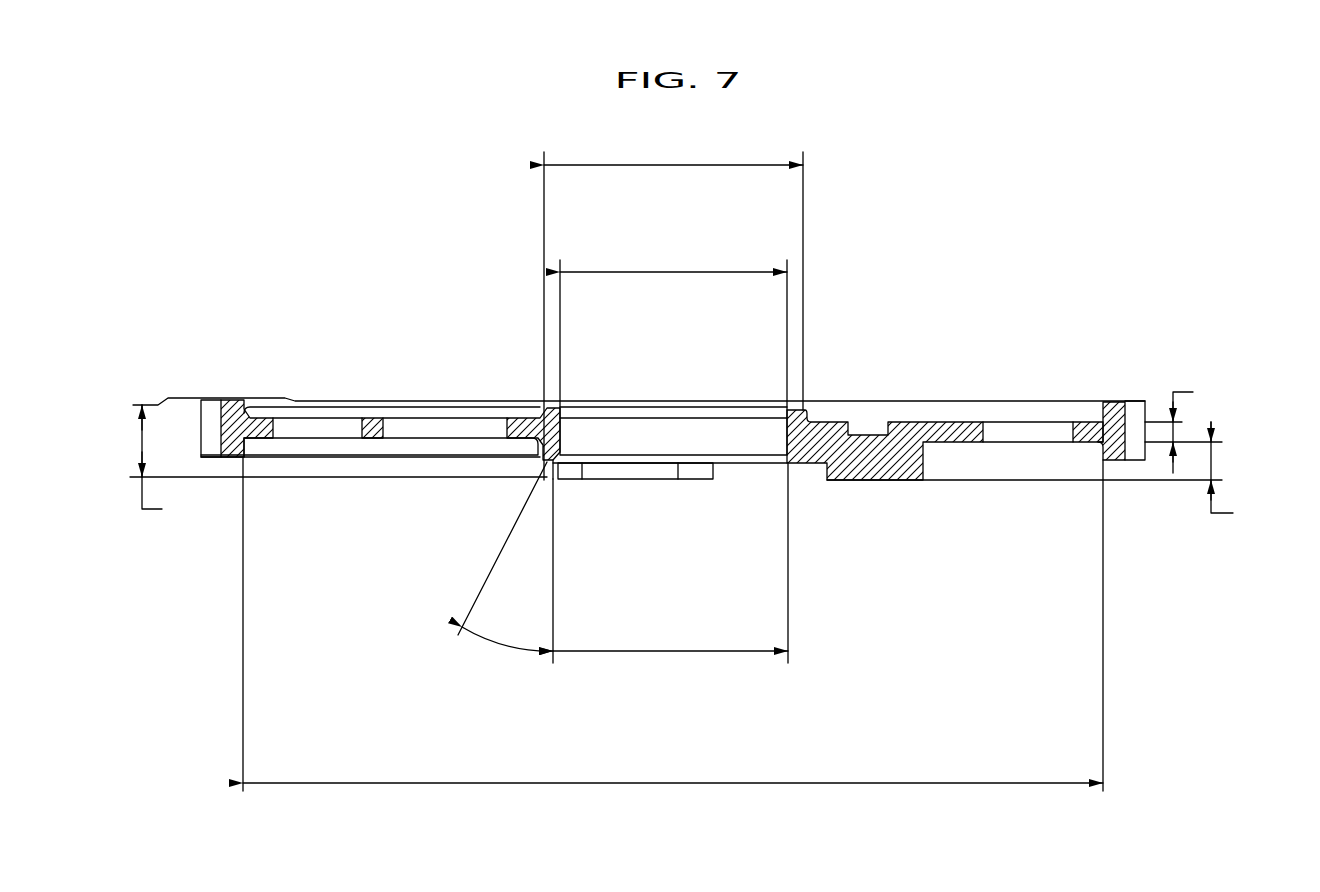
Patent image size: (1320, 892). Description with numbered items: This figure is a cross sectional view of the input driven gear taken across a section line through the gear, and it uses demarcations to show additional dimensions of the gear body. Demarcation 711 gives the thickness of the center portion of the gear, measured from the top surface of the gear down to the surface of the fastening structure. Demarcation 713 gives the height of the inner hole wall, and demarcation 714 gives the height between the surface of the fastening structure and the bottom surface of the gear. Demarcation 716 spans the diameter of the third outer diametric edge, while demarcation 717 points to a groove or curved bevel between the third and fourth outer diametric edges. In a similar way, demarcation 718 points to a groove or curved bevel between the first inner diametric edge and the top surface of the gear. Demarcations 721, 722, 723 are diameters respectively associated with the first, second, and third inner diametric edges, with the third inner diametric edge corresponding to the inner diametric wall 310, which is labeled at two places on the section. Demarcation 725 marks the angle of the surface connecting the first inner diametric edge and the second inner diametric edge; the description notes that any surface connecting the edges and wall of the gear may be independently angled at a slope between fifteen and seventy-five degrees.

The inner diametric wall 310 is at (625, 432).
The demarcation 711 is at (174, 465).
The demarcation 713 is at (1205, 427).
The demarcation 714 is at (1244, 476).
The demarcation 716 is at (673, 636).
The demarcation 717 is at (250, 446).
The demarcation 718 is at (812, 408).
The demarcation 721 is at (673, 308).
The demarcation 722 is at (670, 573).
The demarcation 723 is at (673, 330).
The demarcation 725 is at (505, 569).